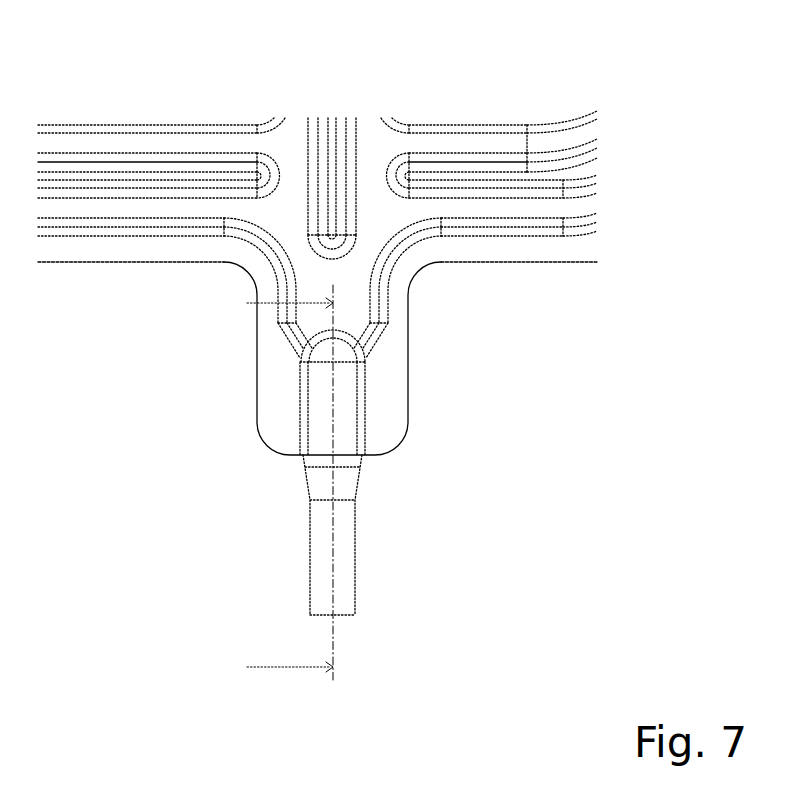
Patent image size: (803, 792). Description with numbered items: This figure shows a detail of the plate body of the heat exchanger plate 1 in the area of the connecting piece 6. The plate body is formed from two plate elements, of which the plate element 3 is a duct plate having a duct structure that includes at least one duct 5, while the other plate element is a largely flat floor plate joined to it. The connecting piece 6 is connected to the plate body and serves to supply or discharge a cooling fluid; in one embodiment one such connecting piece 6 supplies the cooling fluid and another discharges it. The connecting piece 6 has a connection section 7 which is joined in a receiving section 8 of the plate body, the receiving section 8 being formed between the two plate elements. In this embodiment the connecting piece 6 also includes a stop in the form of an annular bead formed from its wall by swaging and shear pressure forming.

The heat exchanger plate 1 is at (400, 398).
The plate element 3 is at (531, 126).
The duct 5 is at (486, 211).
The connecting piece 6 is at (347, 565).
The connection section 7 is at (348, 424).
The receiving section 8 is at (302, 423).